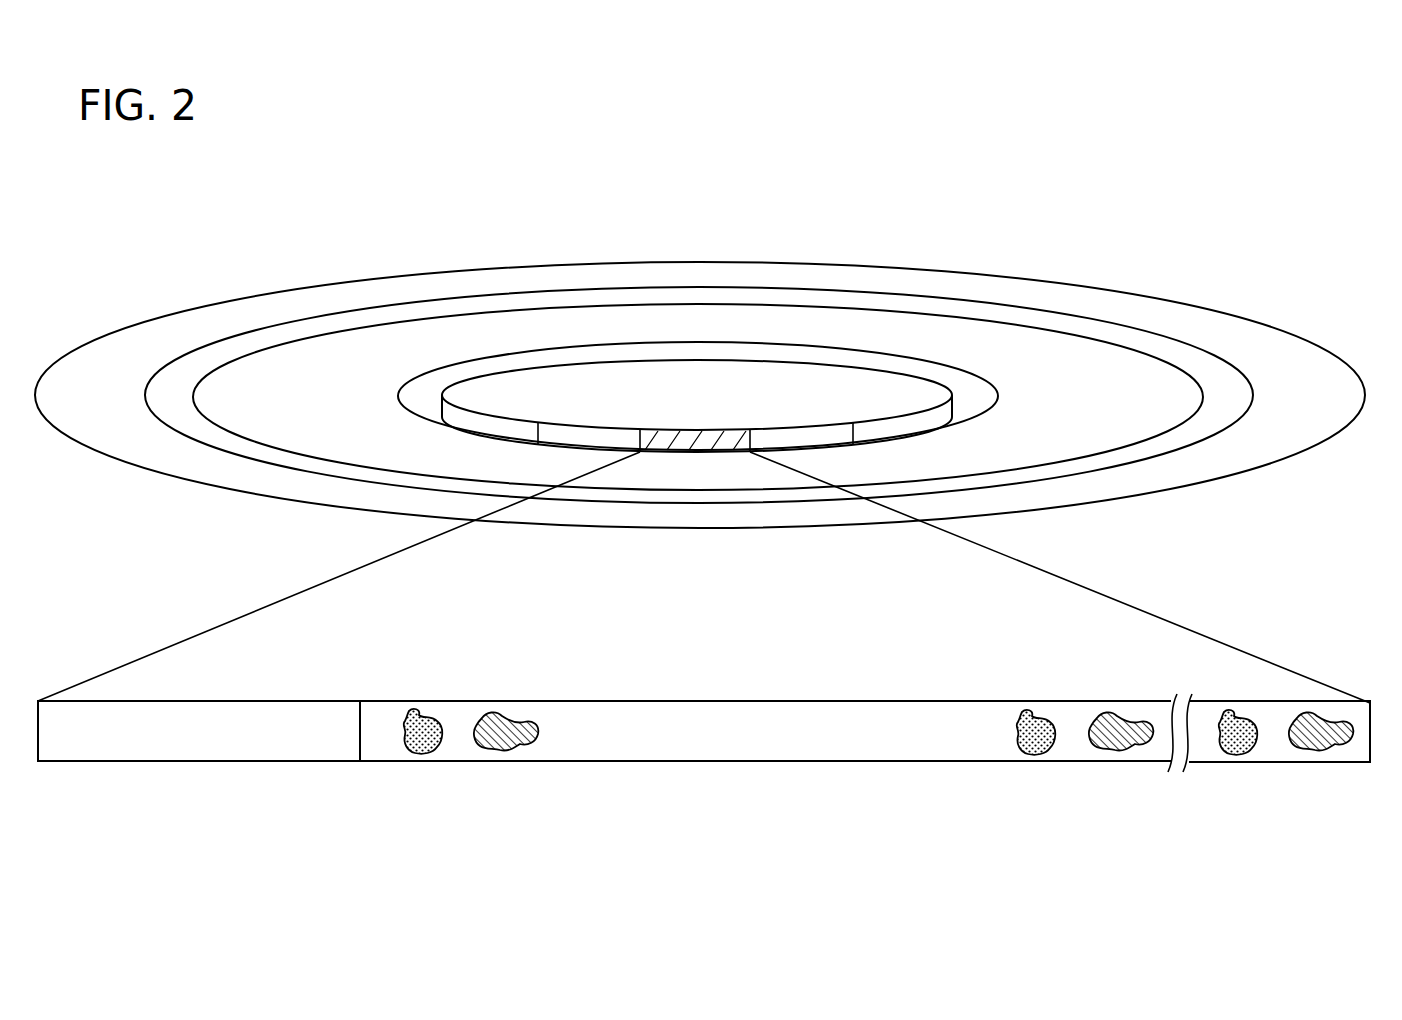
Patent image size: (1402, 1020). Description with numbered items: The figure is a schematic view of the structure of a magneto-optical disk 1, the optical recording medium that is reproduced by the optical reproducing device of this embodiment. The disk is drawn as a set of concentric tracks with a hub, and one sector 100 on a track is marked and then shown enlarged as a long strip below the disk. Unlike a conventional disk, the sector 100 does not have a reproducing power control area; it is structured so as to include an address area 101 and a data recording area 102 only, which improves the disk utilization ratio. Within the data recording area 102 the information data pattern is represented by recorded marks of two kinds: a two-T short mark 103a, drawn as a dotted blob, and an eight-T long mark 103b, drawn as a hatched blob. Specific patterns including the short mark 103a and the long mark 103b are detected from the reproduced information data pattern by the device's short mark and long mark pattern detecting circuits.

The magneto-optical disk 1 is at (447, 268).
The sector 100 is at (645, 430).
The address area 101 is at (232, 700).
The data recording area 102 is at (453, 701).
The short mark 103a is at (418, 755).
The long mark 103b is at (513, 755).